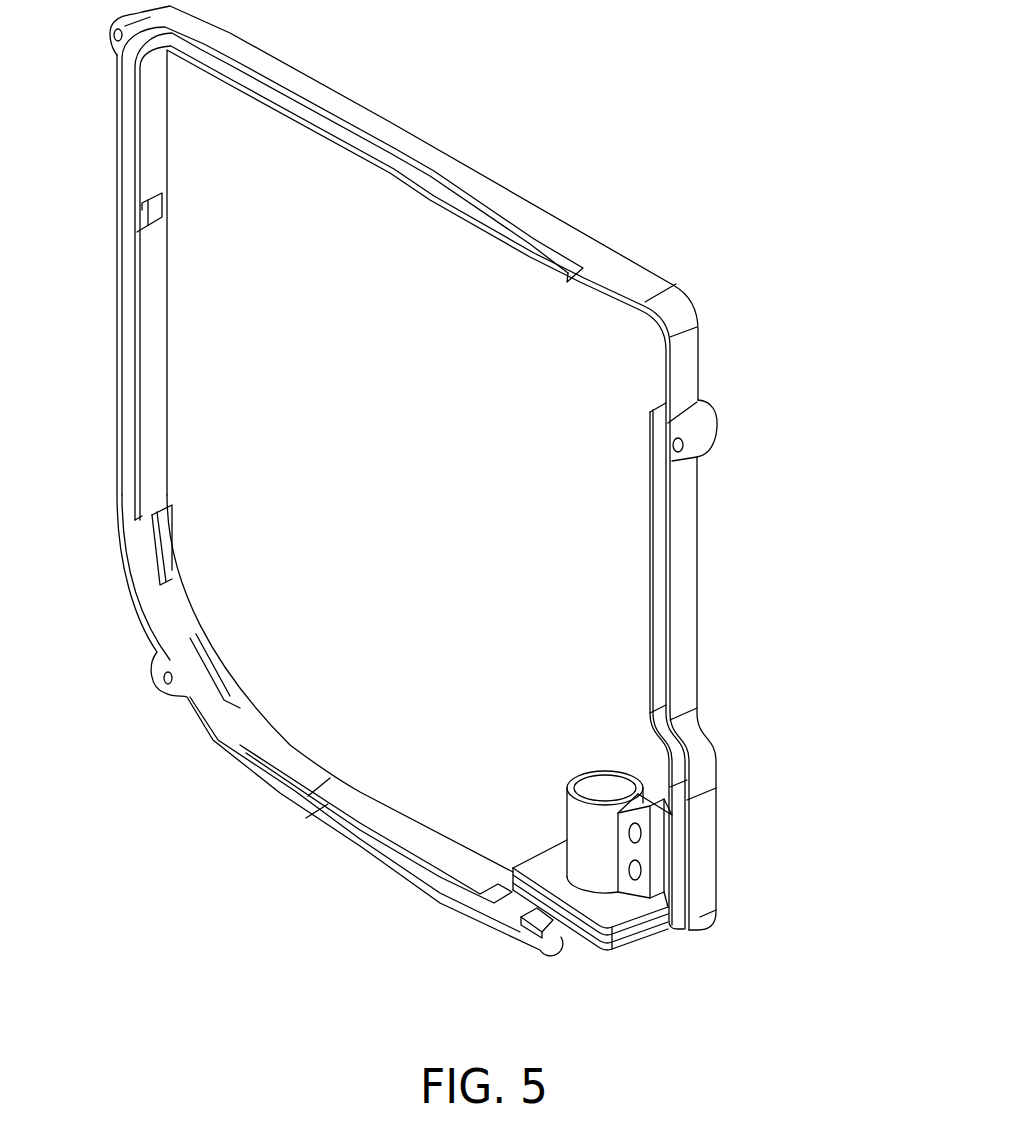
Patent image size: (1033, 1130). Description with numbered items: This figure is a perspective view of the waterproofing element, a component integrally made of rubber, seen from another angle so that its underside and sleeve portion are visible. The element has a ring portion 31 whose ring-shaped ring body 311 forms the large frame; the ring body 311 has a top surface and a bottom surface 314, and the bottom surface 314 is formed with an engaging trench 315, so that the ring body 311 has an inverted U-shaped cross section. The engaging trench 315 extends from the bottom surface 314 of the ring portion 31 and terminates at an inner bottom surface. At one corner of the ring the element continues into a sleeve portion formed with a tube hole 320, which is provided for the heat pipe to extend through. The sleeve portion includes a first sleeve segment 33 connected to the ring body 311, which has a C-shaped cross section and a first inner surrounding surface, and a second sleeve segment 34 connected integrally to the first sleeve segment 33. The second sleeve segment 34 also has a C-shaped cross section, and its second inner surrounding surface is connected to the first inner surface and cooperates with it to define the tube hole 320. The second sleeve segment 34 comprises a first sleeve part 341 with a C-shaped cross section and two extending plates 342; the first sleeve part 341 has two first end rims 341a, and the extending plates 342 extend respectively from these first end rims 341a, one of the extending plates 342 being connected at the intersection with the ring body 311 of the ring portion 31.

The ring portion 31 is at (418, 481).
The ring body 311 is at (567, 242).
The bottom surface 314 is at (543, 267).
The engaging trench 315 is at (515, 237).
The first sleeve segment 33 is at (657, 940).
The second sleeve segment 34 is at (665, 764).
The first sleeve part 341 is at (571, 786).
The tube hole 320 is at (607, 782).
The extending plates 342 is at (636, 812).
The first end rims 341a is at (626, 802).